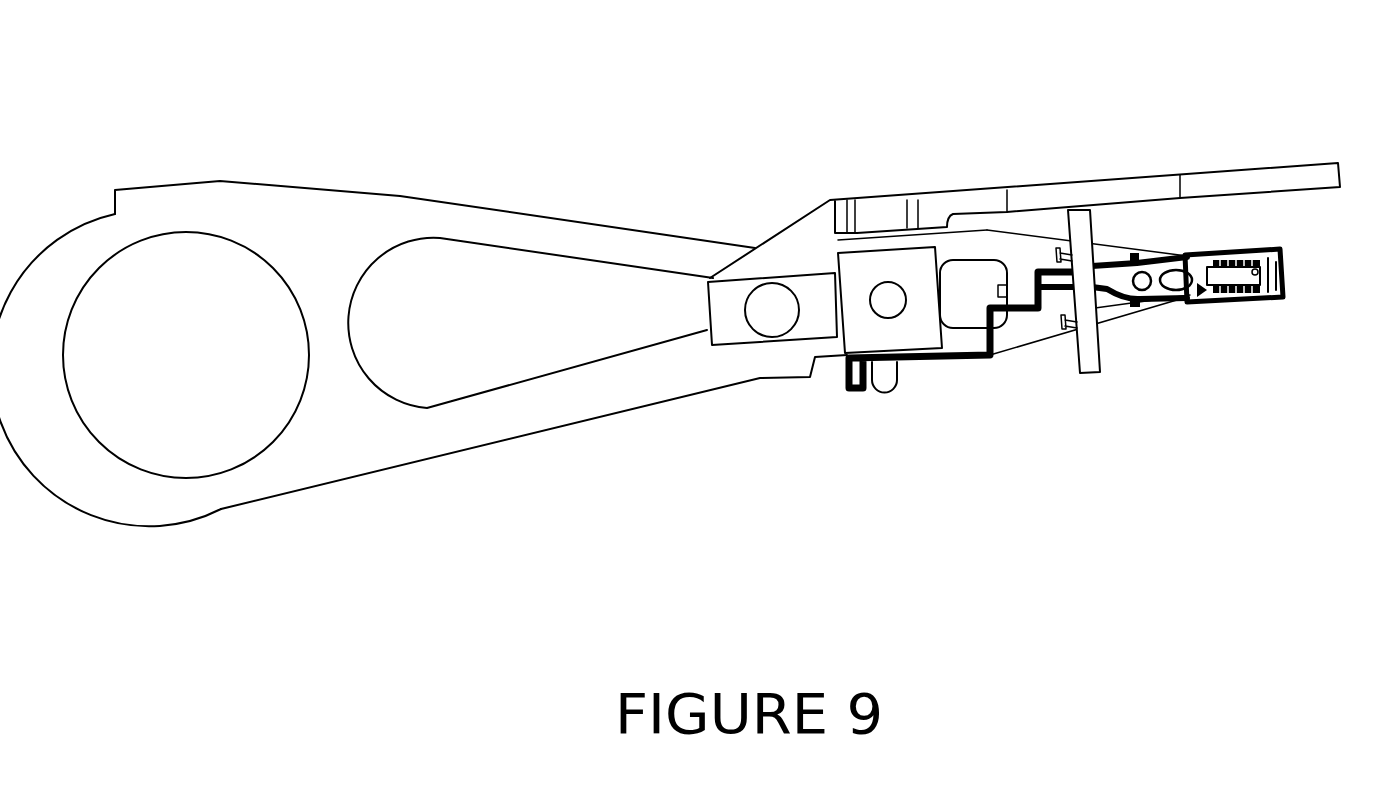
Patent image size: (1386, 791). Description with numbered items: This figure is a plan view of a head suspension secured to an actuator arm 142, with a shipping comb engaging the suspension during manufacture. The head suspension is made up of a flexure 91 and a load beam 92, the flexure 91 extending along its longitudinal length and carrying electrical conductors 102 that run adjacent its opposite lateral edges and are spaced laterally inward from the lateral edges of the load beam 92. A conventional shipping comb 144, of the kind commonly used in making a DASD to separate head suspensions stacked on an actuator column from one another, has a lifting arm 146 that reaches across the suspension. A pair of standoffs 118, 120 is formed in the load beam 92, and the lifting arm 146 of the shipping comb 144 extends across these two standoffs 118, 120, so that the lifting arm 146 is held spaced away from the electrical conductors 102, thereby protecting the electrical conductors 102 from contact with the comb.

The flexure 91 is at (1207, 305).
The load beam 92 is at (1022, 343).
The electrical conductors 102 is at (940, 362).
The standoff 118 is at (1106, 258).
The standoff 120 is at (1110, 305).
The actuator arm 142 is at (543, 228).
The shipping comb 144 is at (1017, 195).
The lifting arm 146 is at (1077, 222).